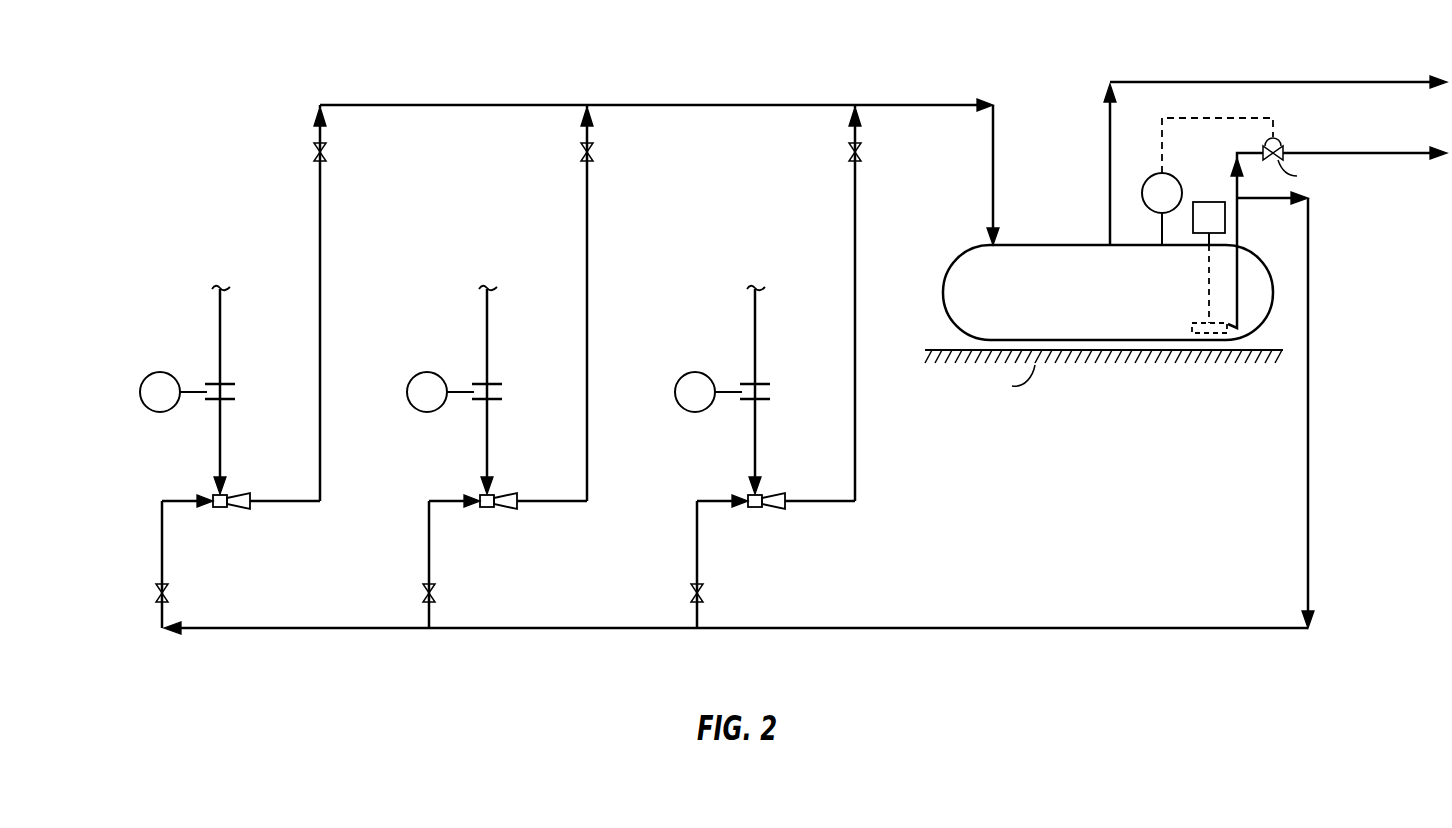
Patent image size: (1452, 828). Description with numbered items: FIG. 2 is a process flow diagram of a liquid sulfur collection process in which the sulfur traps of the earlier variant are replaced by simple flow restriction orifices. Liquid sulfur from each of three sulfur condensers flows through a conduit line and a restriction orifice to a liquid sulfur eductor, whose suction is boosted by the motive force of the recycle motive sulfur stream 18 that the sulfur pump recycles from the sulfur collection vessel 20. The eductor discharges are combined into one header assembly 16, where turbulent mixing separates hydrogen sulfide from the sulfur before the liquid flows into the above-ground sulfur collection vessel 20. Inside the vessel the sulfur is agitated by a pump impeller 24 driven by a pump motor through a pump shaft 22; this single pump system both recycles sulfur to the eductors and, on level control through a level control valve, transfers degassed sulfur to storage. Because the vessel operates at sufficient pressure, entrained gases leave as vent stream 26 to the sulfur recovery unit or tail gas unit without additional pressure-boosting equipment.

The header assembly 16 is at (727, 105).
The recycle motive sulfur stream 18 is at (1308, 413).
The sulfur collection vessel 20 is at (1055, 252).
The pump shaft 22 is at (1205, 287).
The pump impeller 24 is at (1198, 322).
The vent stream 26 is at (1125, 82).